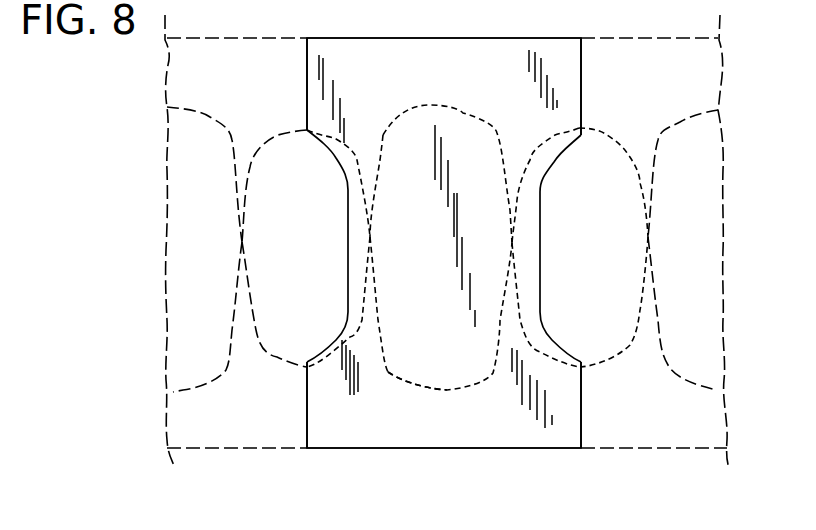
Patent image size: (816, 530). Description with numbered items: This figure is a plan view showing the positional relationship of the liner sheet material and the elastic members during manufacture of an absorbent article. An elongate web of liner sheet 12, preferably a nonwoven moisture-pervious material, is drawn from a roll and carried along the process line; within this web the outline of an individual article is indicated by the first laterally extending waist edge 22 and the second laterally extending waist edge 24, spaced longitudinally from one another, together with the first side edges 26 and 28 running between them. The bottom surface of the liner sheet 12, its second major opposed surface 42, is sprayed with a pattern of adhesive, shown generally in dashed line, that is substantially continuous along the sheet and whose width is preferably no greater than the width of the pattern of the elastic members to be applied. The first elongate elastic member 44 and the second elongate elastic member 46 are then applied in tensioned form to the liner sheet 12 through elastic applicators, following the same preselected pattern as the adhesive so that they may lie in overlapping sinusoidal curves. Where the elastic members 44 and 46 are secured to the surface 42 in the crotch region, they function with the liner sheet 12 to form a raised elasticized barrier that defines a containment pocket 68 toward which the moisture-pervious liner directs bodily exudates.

The liner sheet 12 is at (340, 423).
The first laterally extending waist edge 22 is at (500, 38).
The second laterally extending waist edge 24 is at (472, 450).
The first side edge 26 is at (307, 80).
The first side edge 28 is at (580, 90).
The second major opposed surface 42 is at (529, 425).
The first elongate elastic member 44 is at (383, 135).
The second elongate elastic member 46 is at (388, 372).
The containment pocket 68 is at (428, 360).